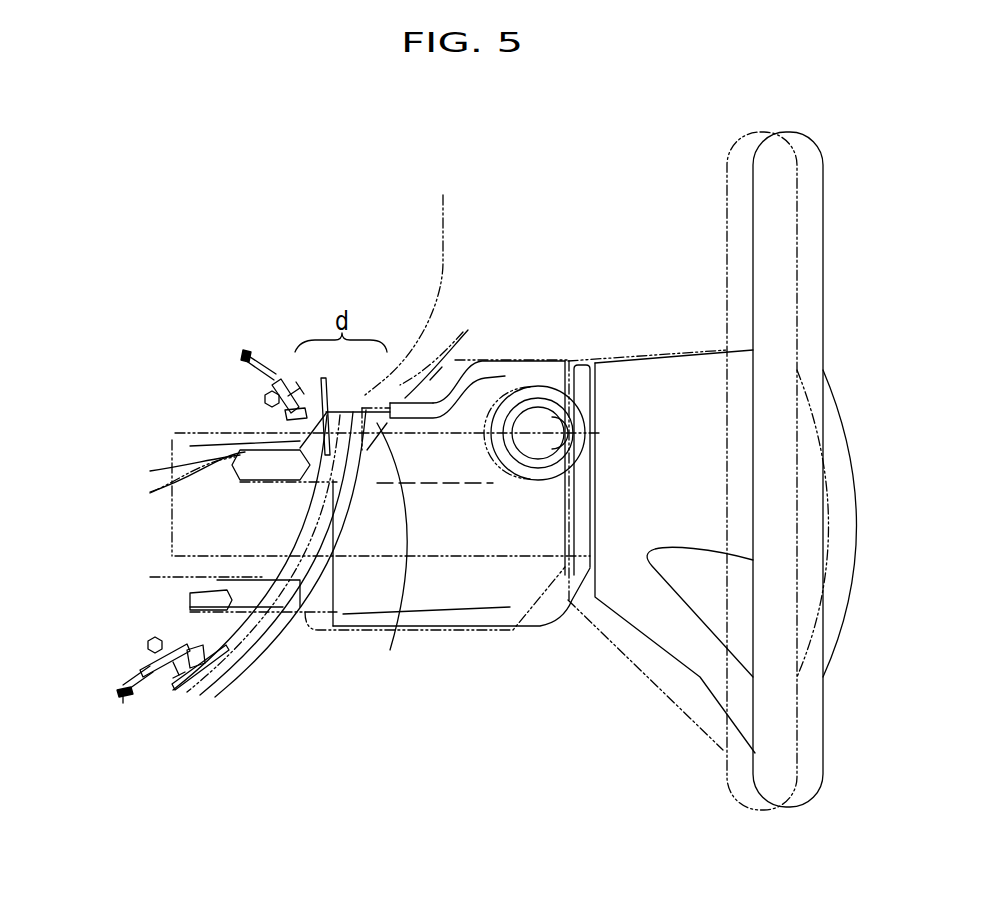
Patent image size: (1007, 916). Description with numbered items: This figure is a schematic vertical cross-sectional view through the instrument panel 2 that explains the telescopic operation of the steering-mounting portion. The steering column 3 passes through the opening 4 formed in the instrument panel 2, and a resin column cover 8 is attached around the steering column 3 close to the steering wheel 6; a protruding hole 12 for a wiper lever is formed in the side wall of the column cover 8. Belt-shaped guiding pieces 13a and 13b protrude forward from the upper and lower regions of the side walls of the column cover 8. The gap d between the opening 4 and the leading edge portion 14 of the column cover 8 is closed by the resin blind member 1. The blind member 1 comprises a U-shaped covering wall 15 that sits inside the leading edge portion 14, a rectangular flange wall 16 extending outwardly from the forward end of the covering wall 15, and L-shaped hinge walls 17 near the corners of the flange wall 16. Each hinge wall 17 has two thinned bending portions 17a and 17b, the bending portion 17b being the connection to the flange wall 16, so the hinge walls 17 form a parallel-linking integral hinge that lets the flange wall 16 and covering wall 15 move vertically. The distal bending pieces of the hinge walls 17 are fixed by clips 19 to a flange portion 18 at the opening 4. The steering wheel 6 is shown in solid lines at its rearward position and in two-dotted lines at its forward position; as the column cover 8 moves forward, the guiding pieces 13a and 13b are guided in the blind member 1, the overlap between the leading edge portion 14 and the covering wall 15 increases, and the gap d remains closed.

The blind member 1 is at (216, 678).
The instrument panel 2 is at (444, 228).
The steering column 3 is at (180, 428).
The opening 4 is at (190, 446).
The steering wheel 6 is at (800, 808).
The column cover 8 is at (536, 630).
The protruding hole 12 is at (557, 413).
The guiding piece 13a is at (150, 492).
The guiding piece 13b is at (200, 598).
The leading edge portion 14 is at (458, 342).
The covering wall 15 is at (387, 640).
The flange wall 16 is at (227, 655).
The hinge wall 17 is at (287, 378).
The bending portion 17a is at (300, 407).
The bending portion 17b is at (326, 412).
The flange portion 18 is at (258, 378).
The clip 19 is at (267, 398).